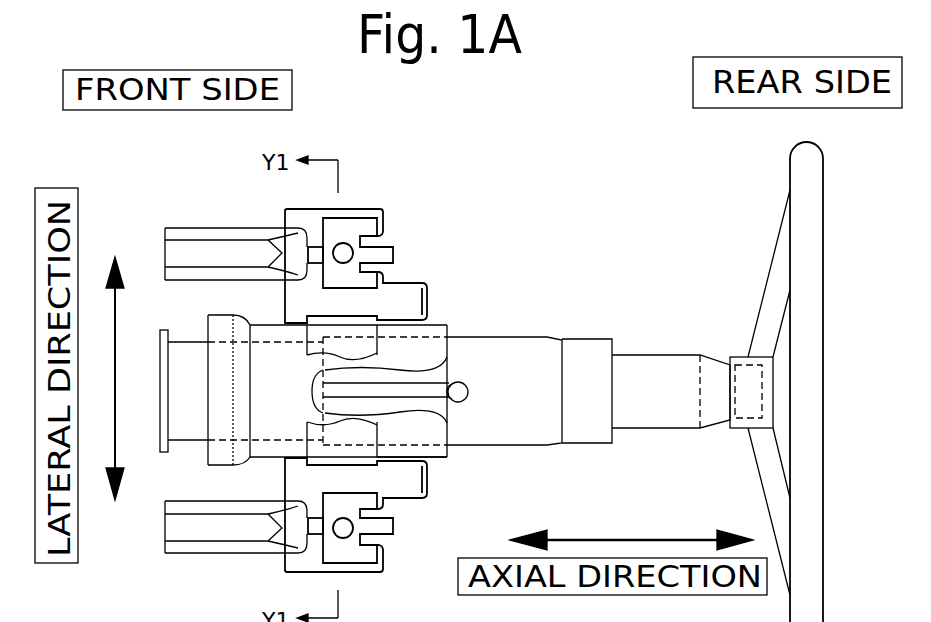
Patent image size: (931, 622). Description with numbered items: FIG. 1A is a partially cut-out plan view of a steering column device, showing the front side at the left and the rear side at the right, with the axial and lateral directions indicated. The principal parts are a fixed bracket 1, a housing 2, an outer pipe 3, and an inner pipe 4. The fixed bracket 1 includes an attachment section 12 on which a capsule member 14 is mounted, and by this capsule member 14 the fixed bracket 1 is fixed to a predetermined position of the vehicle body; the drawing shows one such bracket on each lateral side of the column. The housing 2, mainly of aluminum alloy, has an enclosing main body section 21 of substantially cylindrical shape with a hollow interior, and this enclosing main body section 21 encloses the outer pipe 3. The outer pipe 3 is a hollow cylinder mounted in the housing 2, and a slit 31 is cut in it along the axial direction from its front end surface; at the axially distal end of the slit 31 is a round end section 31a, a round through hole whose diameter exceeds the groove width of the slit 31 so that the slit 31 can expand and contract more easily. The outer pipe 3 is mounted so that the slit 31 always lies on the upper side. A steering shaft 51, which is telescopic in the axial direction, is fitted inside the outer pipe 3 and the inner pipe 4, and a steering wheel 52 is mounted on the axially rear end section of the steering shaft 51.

The fixed bracket 1 is at (446, 294).
The housing 2 is at (461, 318).
The outer pipe 3 is at (521, 327).
The inner pipe 4 is at (185, 343).
The attachment section 12 is at (412, 293).
The capsule member 14 is at (389, 253).
The enclosing main body section 21 is at (441, 462).
The slit 31 is at (423, 396).
The round end section 31a is at (468, 393).
The steering shaft 51 is at (645, 363).
The steering wheel 52 is at (808, 543).